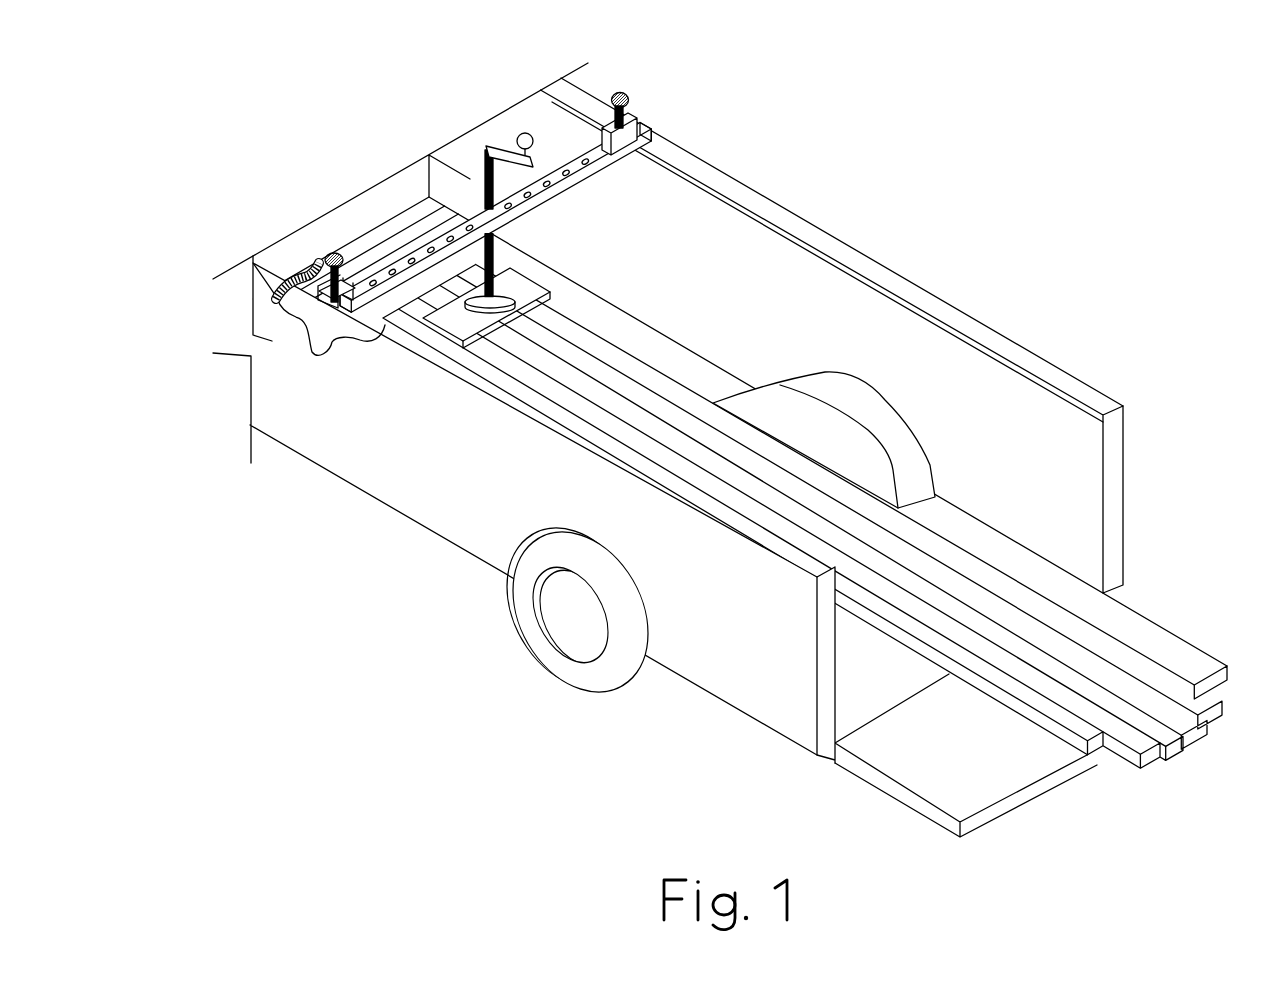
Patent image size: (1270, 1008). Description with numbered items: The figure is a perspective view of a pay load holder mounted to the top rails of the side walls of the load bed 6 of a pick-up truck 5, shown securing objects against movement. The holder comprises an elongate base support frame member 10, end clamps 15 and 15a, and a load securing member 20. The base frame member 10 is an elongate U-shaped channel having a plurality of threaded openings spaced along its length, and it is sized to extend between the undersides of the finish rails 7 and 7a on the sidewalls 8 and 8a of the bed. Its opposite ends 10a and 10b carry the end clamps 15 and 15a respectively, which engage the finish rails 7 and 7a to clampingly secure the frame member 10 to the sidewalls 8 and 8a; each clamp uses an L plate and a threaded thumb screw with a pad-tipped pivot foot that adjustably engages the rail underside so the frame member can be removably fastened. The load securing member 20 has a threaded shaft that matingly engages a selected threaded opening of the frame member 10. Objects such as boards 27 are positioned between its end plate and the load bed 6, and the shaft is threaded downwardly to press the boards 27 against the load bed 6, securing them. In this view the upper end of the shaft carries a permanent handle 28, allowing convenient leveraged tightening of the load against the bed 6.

The pick-up truck 5 is at (982, 220).
The load bed 6 is at (877, 691).
The finish rail 7 is at (649, 472).
The finish rail 7a is at (982, 332).
The sidewall 8 is at (497, 470).
The sidewall 8a is at (752, 290).
The base support frame member 10 is at (580, 215).
The opposite end of base frame member 10a is at (343, 340).
The opposite end of base frame member 10b is at (620, 161).
The end clamp 15 is at (315, 306).
The end clamp 15a is at (647, 103).
The load securing member 20 is at (377, 142).
The boards 27 is at (1117, 615).
The permanent handle 28 is at (497, 147).